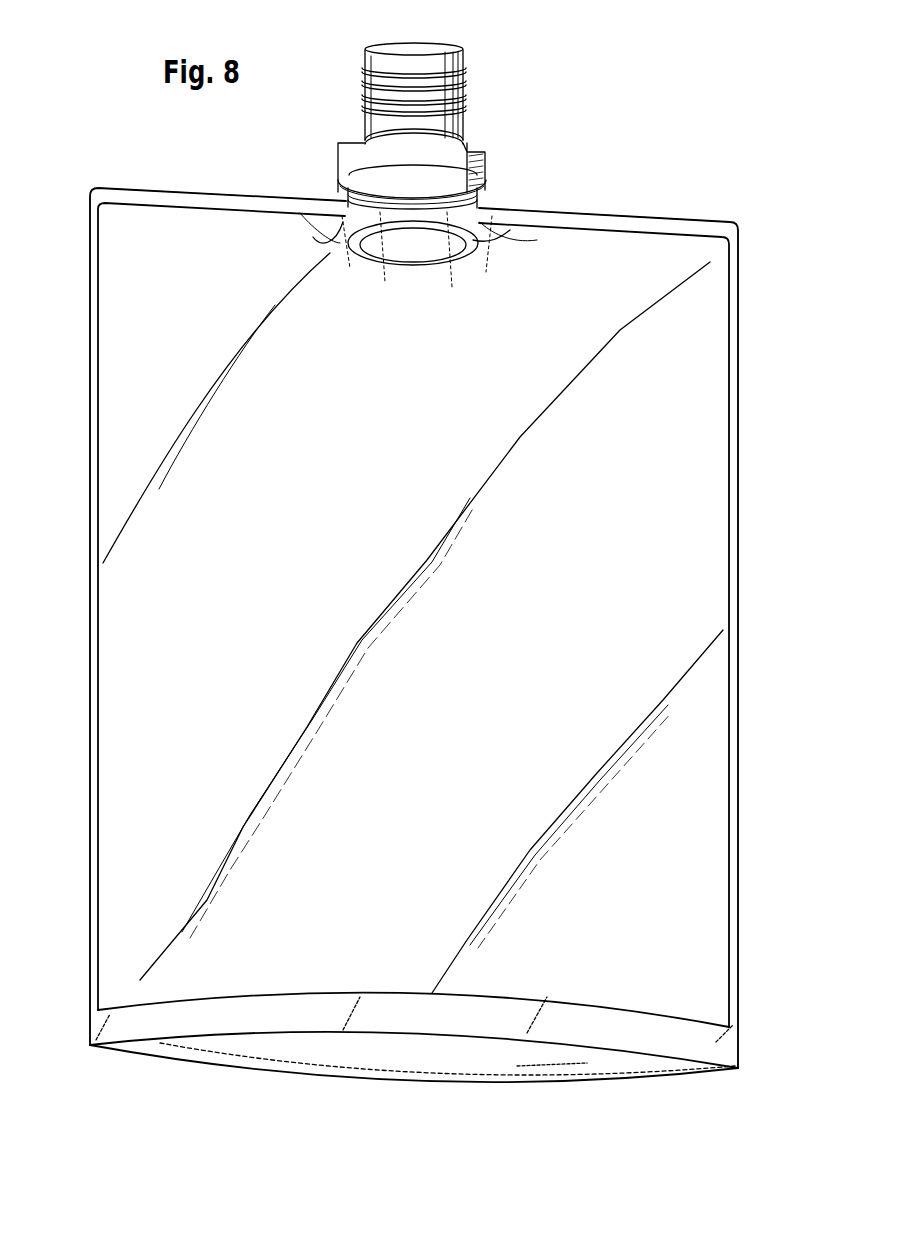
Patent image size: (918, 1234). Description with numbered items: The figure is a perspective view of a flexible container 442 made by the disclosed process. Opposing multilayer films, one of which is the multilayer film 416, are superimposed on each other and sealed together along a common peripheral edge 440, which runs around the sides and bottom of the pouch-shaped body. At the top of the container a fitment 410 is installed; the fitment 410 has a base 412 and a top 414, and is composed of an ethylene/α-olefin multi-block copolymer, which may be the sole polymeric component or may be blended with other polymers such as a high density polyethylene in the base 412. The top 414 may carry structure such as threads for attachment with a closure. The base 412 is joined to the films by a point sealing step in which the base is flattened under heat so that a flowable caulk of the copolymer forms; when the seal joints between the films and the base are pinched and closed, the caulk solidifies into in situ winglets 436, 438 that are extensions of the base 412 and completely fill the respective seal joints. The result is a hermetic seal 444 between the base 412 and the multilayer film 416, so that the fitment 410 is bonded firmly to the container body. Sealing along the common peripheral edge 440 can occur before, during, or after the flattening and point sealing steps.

The fitment 410 is at (518, 85).
The base 412 is at (477, 207).
The top 414 is at (383, 54).
The multilayer film 416 is at (170, 587).
The in situ winglet 436 is at (313, 237).
The in situ winglet 438 is at (510, 230).
The common peripheral edge 440 is at (610, 212).
The flexible container 442 is at (683, 171).
The hermetic seal 444 is at (306, 179).